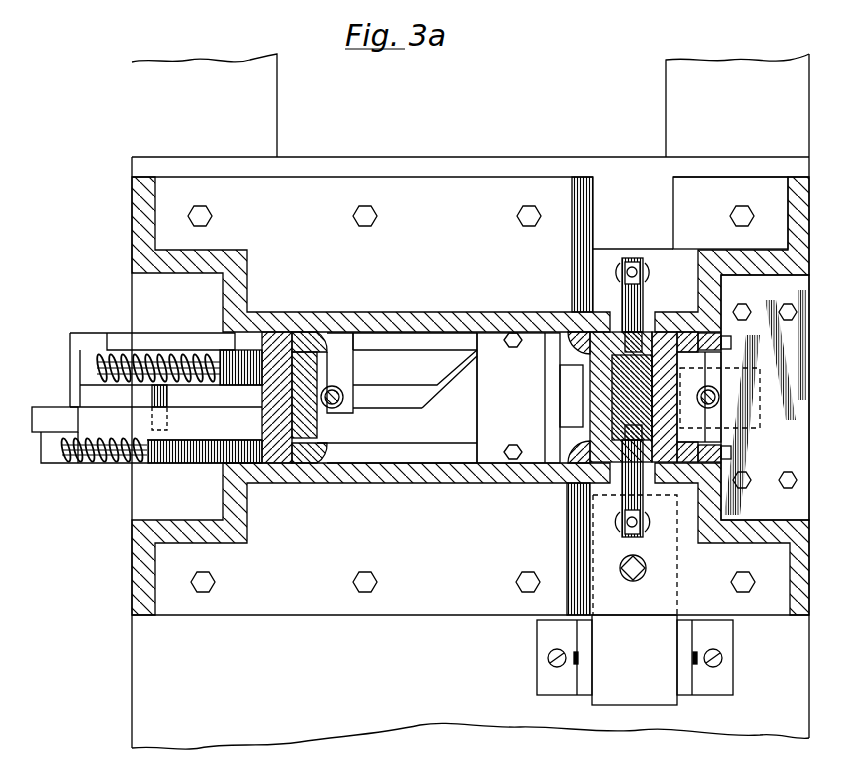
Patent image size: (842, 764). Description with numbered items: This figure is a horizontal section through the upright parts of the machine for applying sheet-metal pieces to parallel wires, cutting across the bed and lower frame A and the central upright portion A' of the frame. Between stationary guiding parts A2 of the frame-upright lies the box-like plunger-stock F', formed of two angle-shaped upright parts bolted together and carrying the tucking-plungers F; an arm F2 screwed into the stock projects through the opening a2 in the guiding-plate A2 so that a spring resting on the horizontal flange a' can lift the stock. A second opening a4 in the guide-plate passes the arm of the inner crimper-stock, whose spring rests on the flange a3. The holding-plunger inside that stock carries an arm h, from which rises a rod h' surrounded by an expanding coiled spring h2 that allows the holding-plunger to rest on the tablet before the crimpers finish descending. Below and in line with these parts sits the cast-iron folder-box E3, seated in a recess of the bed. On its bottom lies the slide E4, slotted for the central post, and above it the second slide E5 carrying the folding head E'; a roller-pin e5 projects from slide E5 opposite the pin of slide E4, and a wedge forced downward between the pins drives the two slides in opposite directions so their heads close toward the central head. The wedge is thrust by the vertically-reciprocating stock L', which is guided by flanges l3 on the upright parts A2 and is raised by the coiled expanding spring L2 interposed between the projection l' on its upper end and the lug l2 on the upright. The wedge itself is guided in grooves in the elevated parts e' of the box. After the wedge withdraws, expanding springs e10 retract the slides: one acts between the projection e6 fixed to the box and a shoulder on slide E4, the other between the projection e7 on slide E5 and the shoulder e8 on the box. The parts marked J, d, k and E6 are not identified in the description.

The bed and lower frame A is at (470, 401).
The central upright portion of the frame A' is at (466, 396).
The stationary guiding part of the frame-upright A2 is at (408, 308).
The horizontal flange a' is at (470, 244).
The opening in the guiding-plate a2 is at (652, 318).
The flange a3 is at (470, 549).
The opening in the guide-plate a4 is at (622, 488).
The bottom bracket block J is at (635, 660).
The tucking-plungers F is at (640, 452).
The plunger-stock F' is at (622, 397).
The arm F2 is at (645, 290).
The threaded core d is at (632, 386).
The guide blocks k is at (704, 397).
The arm h is at (708, 397).
The rod h' is at (703, 397).
The expanding coiled spring h2 is at (720, 398).
The folding head E' is at (571, 396).
The cast-iron box E3 is at (273, 397).
The slide E4 is at (415, 379).
The second slide E5 is at (390, 419).
The slide block E6 is at (518, 398).
The vertically-reciprocating stock L' is at (277, 397).
The projection l' is at (304, 395).
The lug l2 is at (342, 414).
The coiled expanding spring L2 is at (333, 385).
The flanges l3 is at (285, 396).
The elevated parts of the folder-box e' is at (171, 407).
The roller-pin e5 is at (241, 367).
The projection e6 is at (104, 378).
The projection e7 is at (147, 435).
The shoulder e8 is at (160, 450).
The expanding springs e10 is at (125, 383).